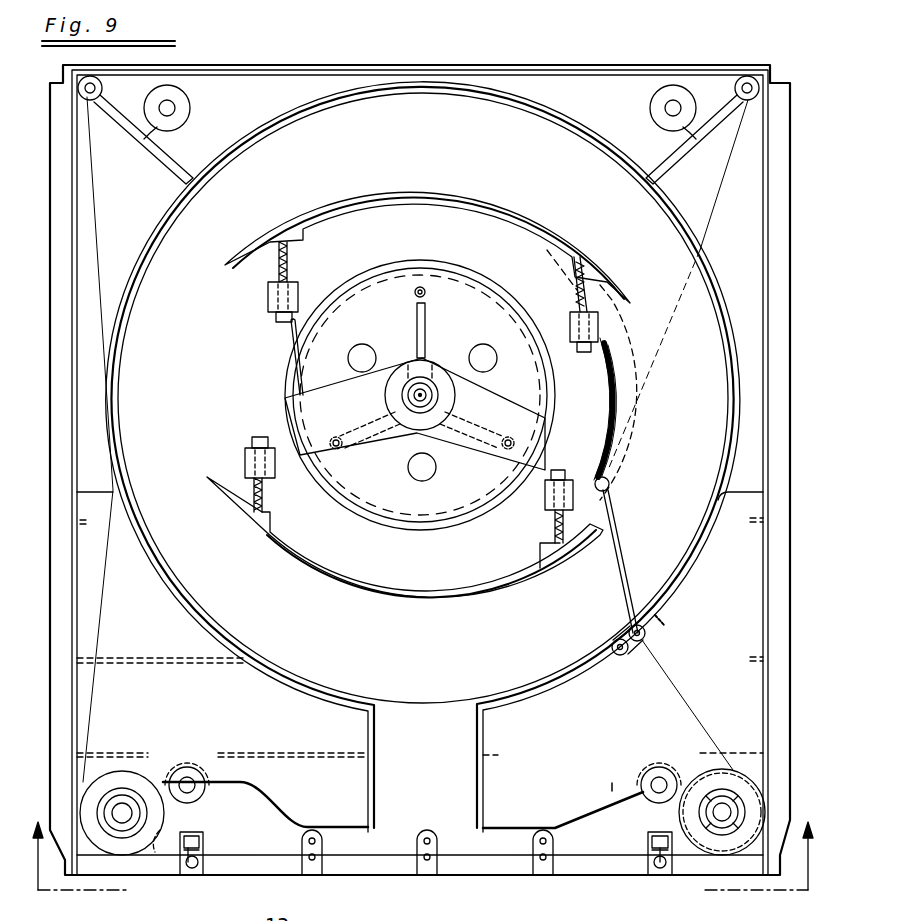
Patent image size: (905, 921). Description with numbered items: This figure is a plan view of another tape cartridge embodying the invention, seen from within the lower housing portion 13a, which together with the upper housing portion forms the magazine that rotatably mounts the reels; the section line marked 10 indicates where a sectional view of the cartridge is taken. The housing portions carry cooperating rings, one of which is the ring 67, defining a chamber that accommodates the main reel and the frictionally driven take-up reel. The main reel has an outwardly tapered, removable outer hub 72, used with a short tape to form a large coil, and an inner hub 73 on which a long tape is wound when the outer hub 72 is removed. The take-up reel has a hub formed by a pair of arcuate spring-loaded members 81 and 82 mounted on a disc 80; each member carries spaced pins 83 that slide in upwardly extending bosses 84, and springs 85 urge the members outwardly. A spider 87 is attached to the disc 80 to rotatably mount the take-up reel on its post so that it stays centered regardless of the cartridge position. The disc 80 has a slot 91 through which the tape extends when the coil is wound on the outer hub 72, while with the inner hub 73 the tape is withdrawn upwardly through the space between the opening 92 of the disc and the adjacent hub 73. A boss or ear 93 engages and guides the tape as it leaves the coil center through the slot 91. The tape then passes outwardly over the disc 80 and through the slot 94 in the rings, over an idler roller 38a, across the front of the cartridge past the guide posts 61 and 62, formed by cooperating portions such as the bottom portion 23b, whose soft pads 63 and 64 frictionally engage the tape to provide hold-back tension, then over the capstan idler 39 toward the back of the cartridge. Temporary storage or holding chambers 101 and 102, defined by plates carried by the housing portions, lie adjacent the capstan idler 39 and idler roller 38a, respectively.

The lower housing portion 13a is at (430, 63).
The ring 67 is at (628, 180).
The disc 80 is at (338, 641).
The temporary storage chamber 101 is at (176, 697).
The temporary storage chamber 102 is at (736, 641).
The inner hub 73 is at (462, 272).
The opening 92 is at (360, 286).
The spider 87 is at (348, 421).
The arcuate spring-loaded member 81 is at (486, 198).
The arcuate spring-loaded member 82 is at (440, 598).
The boss 84 is at (268, 294).
The pin 83 is at (292, 334).
The spring 85 is at (268, 500).
The outer hub 72 is at (605, 300).
The slot 91 is at (612, 420).
The boss or ear 93 is at (612, 482).
The slot 94 is at (616, 638).
The capstan idler 39 is at (130, 790).
The idler roller 38a is at (715, 788).
The guide post portion 23b is at (543, 878).
The soft pad 63 is at (196, 845).
The guide post 61 is at (190, 880).
The soft pad 64 is at (655, 846).
The guide post 62 is at (655, 880).
The section line 10 is at (420, 842).